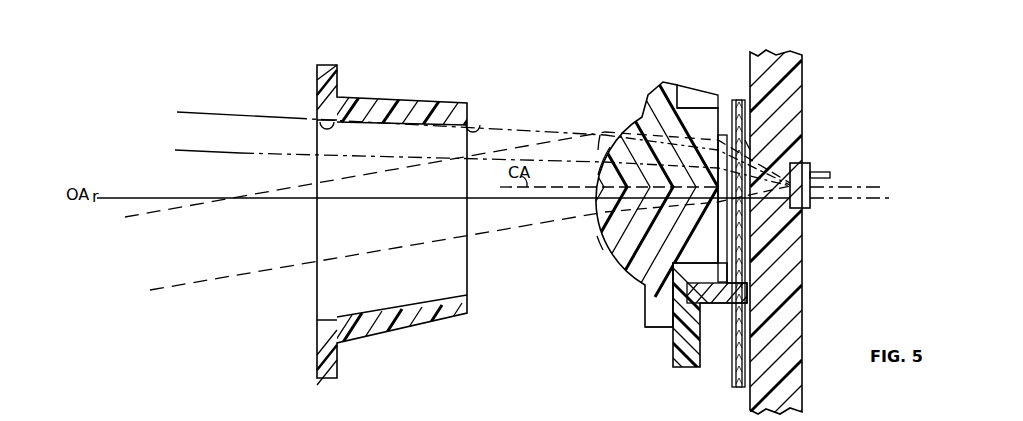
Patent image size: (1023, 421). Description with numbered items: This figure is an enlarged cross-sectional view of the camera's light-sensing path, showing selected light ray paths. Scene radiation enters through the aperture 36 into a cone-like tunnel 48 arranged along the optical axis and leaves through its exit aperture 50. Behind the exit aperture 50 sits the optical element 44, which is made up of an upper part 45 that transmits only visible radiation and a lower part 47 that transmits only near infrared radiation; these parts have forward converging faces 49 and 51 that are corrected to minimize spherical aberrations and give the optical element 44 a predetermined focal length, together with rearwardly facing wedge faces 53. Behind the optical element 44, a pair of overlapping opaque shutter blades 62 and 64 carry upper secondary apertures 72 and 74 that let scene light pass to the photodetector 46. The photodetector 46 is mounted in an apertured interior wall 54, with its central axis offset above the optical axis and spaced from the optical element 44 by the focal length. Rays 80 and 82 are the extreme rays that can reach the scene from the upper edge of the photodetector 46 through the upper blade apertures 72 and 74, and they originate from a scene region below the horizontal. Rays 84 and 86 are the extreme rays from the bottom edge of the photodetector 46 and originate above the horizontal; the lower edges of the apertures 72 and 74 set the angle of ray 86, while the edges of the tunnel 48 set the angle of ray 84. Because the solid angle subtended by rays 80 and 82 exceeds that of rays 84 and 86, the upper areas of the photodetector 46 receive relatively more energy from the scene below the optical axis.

The aperture 36 is at (310, 120).
The optical element 44 is at (642, 87).
The upper part 45 is at (610, 147).
The photodetector 46 is at (830, 180).
The lower part 47 is at (626, 250).
The tunnel 48 is at (407, 97).
The converging face 49 is at (600, 135).
The exit aperture 50 is at (484, 125).
The converging face 51 is at (597, 236).
The wedge faces 53 is at (720, 133).
The apertured interior wall 54 is at (805, 78).
The shutter blade 62 is at (733, 99).
The shutter blade 64 is at (743, 99).
The secondary aperture 72 is at (700, 108).
The secondary aperture 74 is at (748, 145).
The ray 80 is at (170, 210).
The ray 82 is at (220, 278).
The ray 84 is at (200, 111).
The ray 86 is at (217, 150).